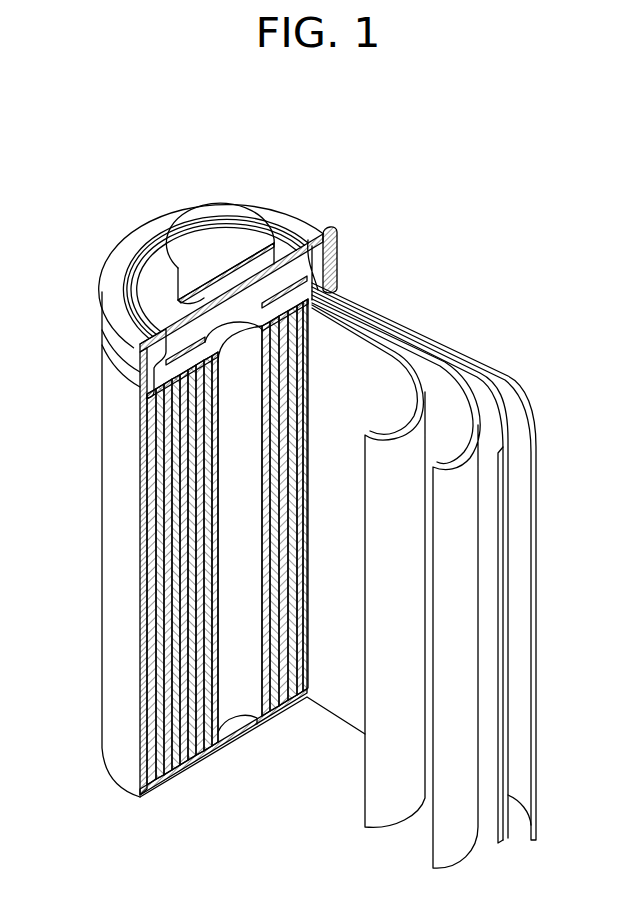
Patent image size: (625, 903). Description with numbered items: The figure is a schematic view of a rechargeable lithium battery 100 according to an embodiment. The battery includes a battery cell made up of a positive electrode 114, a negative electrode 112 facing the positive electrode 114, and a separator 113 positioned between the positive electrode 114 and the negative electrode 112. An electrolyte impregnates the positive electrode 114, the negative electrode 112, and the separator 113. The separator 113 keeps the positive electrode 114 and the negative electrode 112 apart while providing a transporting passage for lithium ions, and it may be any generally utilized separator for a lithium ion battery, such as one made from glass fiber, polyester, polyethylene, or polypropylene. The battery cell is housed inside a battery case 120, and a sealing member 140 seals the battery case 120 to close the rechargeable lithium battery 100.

The rechargeable lithium battery 100 is at (324, 194).
The negative electrode 112 is at (534, 424).
The separator 113 is at (360, 333).
The positive electrode 114 is at (445, 390).
The battery case 120 is at (114, 547).
The sealing member 140 is at (205, 247).